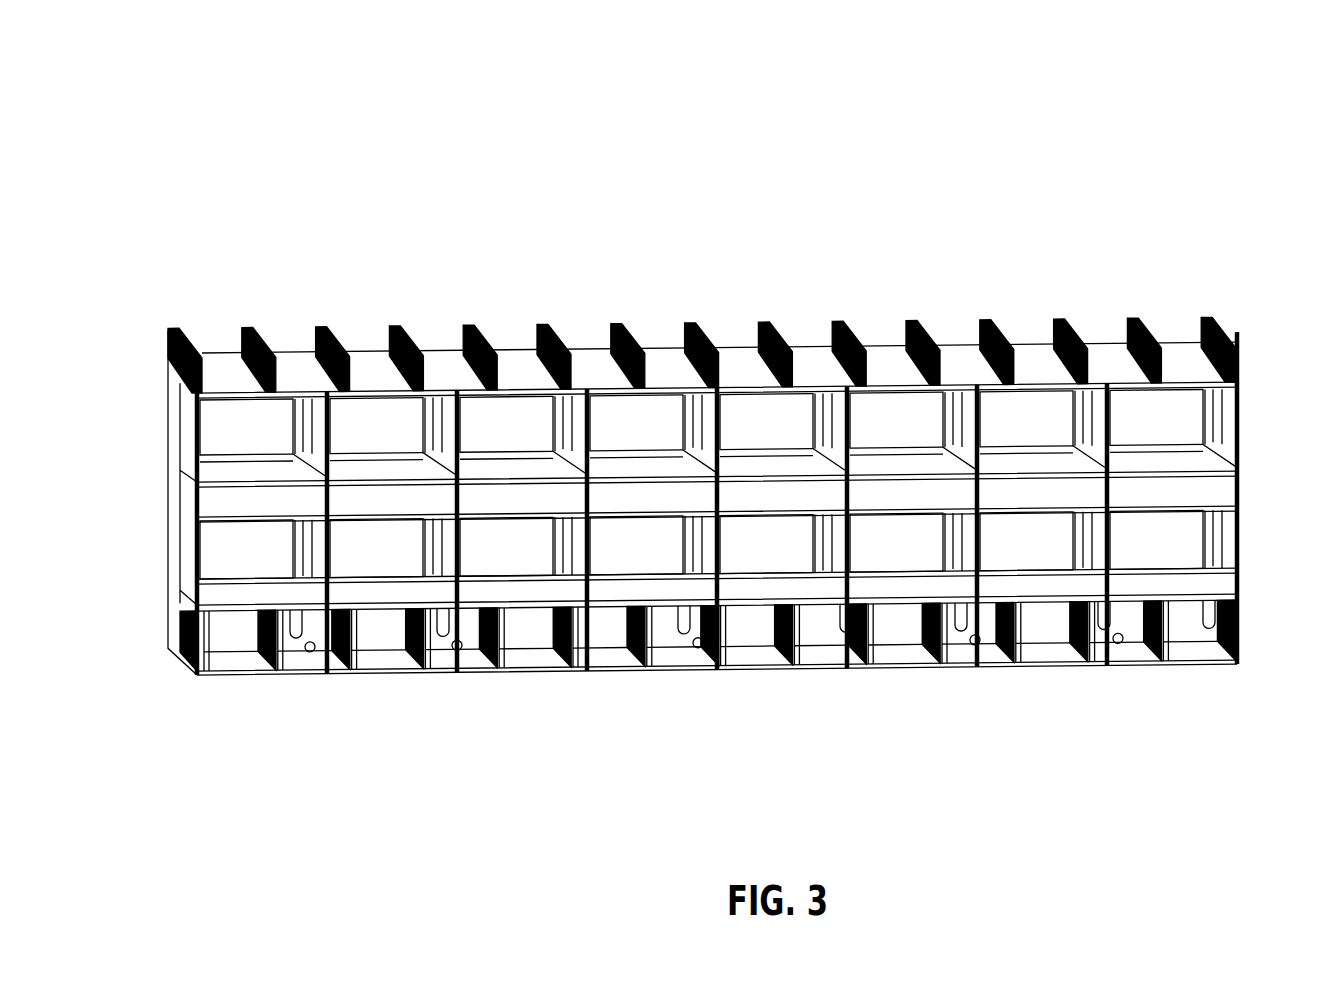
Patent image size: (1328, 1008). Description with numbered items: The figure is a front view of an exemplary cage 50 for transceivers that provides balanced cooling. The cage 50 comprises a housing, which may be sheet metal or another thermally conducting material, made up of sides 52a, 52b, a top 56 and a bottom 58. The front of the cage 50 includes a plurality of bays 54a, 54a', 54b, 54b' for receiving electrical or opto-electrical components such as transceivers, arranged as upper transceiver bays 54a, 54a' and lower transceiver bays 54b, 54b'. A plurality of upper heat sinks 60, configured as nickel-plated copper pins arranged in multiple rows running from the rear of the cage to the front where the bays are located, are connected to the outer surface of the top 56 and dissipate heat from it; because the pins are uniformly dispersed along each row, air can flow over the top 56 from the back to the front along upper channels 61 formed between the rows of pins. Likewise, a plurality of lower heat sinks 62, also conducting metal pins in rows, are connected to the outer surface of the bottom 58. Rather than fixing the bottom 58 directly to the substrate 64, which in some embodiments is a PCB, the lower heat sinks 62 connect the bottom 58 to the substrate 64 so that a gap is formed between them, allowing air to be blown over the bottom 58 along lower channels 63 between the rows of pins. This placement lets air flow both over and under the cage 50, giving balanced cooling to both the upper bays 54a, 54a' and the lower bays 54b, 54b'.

The cage 50 is at (389, 106).
The side 52a is at (187, 531).
The side 52b is at (1243, 470).
The upper transceiver bay 54a is at (242, 371).
The upper transceiver bay 54a' is at (376, 372).
The lower transceiver bay 54b is at (256, 623).
The lower transceiver bay 54b' is at (386, 622).
The top 56 is at (526, 386).
The bottom 58 is at (520, 606).
The upper heat sink 60 is at (768, 322).
The upper channel 61 is at (963, 333).
The lower heat sink 62 is at (720, 643).
The lower channel 63 is at (983, 620).
The substrate 64 is at (1127, 660).